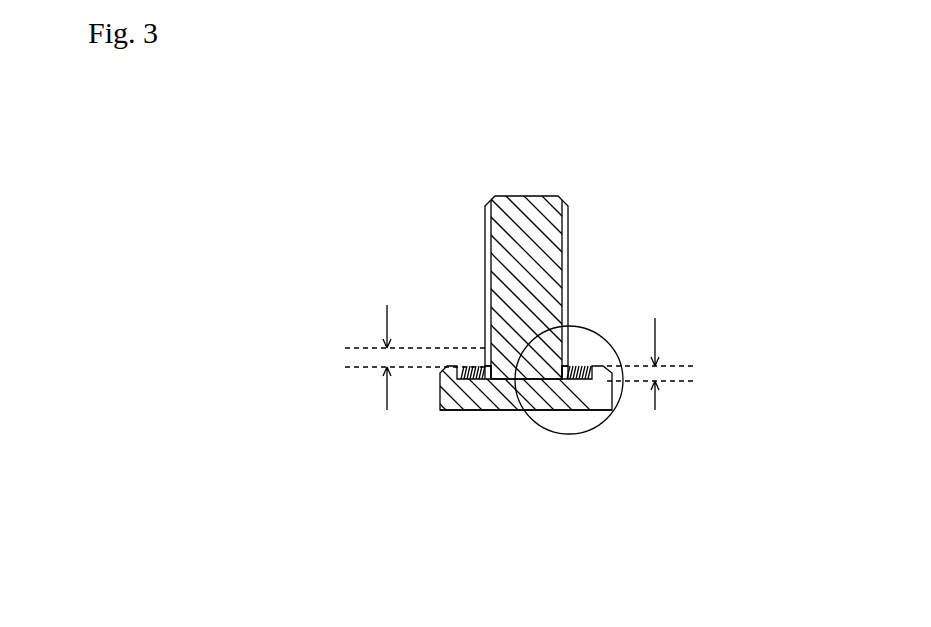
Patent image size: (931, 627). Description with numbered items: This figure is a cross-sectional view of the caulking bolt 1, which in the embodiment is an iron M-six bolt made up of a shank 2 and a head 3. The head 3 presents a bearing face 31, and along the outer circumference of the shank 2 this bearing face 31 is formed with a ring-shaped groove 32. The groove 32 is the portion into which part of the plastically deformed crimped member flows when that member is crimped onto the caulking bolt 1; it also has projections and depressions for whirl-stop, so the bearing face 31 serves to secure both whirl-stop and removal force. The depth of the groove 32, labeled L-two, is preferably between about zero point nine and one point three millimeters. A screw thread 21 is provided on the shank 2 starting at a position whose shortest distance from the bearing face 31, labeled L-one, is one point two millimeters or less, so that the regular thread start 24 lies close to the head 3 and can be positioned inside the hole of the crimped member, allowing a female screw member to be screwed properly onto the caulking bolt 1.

The caulking bolt 1 is at (683, 163).
The shank 2 is at (530, 198).
The screw thread 21 is at (485, 212).
The regular thread start 24 is at (468, 366).
The head 3 is at (463, 404).
The bearing face 31 is at (598, 363).
The groove 32 is at (570, 404).